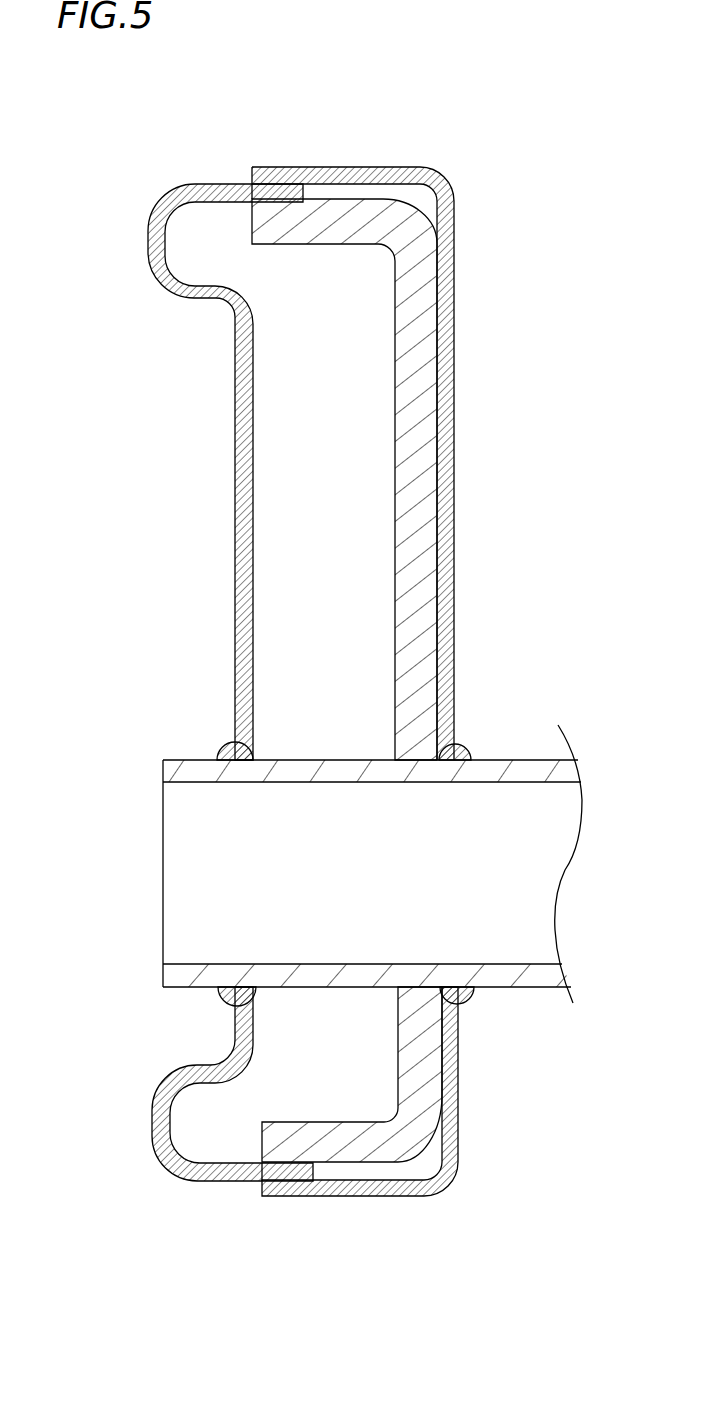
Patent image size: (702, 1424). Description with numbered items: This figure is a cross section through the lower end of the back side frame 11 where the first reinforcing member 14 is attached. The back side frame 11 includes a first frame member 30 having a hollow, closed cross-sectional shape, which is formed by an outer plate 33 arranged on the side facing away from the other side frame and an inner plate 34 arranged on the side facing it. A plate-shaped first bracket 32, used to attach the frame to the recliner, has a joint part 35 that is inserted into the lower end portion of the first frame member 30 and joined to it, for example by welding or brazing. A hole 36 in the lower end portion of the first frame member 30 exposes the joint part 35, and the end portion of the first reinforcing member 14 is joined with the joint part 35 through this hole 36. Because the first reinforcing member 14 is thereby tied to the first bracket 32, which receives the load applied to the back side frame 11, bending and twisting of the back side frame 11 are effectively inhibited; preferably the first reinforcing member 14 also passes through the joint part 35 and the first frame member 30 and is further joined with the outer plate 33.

The back side frame 11 is at (163, 197).
The first reinforcing member 14 is at (163, 862).
The first frame member 30 is at (412, 1283).
The first bracket 32 is at (393, 478).
The outer plate 33 is at (220, 1183).
The inner plate 34 is at (382, 1195).
The joint part 35 is at (423, 560).
The hole 36 is at (467, 755).